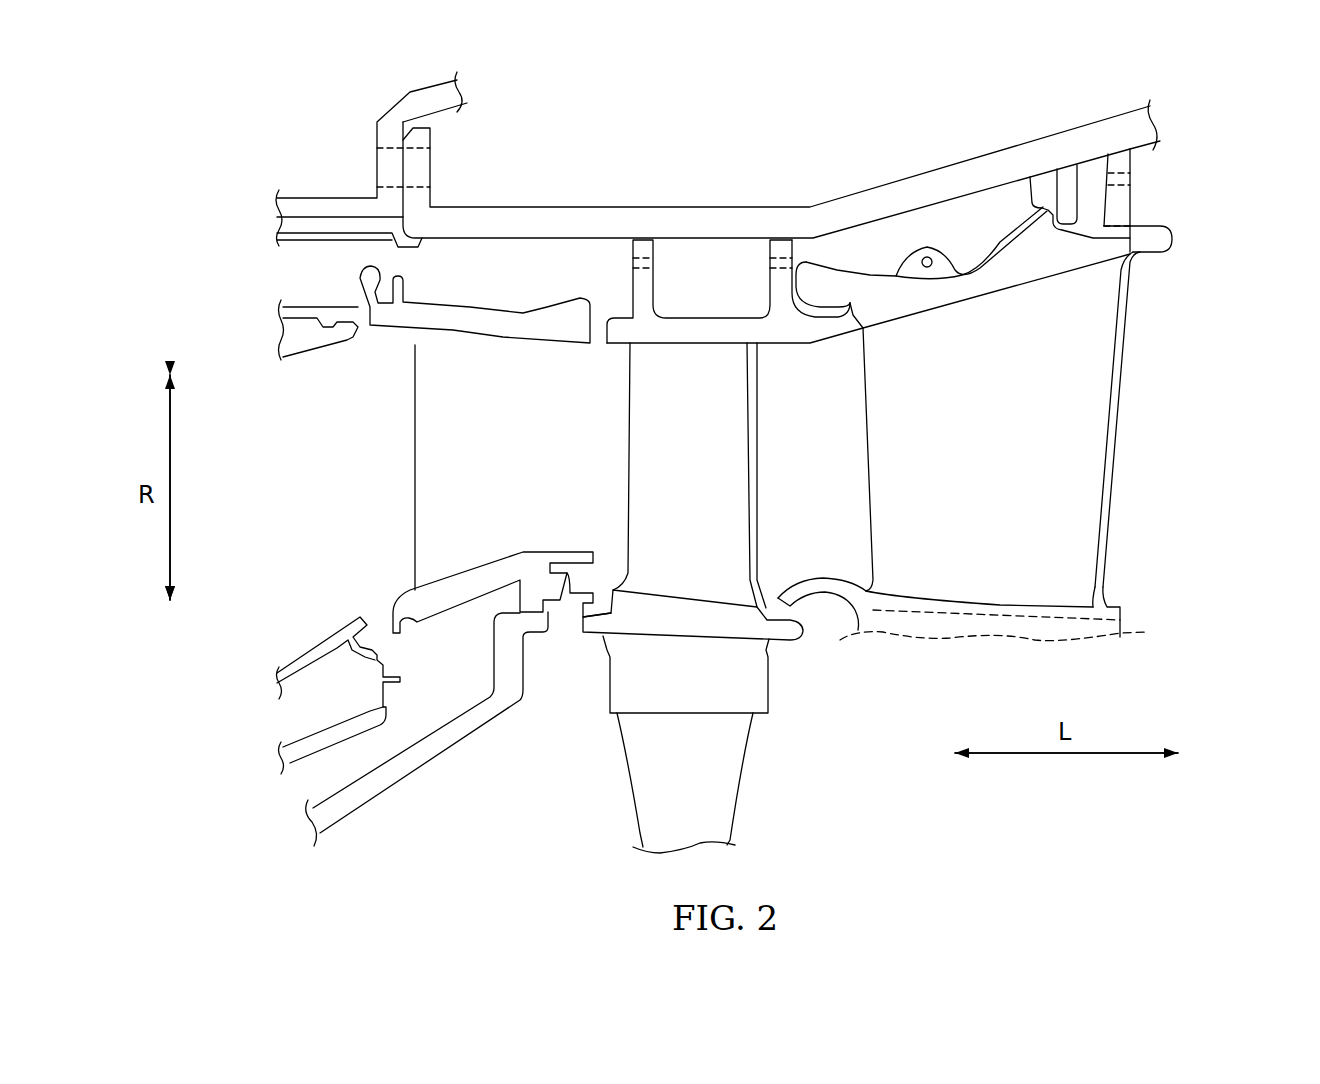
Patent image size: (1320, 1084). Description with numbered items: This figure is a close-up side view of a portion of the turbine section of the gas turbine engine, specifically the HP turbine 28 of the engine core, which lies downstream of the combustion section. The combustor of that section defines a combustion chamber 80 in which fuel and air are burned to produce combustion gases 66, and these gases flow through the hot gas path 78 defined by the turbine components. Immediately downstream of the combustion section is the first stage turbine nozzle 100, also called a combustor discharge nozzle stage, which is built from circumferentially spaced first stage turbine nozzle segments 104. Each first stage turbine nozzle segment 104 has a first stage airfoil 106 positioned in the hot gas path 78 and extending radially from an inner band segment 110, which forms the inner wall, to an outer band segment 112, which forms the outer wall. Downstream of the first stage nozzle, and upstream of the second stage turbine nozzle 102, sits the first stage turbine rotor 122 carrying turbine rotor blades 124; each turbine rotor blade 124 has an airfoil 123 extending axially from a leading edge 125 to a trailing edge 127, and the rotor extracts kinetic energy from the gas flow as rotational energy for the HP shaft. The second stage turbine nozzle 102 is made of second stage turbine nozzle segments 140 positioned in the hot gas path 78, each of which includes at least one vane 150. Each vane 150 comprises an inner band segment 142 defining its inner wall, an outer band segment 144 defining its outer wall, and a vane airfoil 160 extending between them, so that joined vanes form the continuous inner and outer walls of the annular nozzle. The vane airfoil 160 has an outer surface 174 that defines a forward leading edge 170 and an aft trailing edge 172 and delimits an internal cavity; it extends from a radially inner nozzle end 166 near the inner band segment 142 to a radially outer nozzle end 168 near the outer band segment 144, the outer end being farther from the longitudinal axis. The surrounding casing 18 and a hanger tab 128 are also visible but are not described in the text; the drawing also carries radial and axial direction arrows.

The outer casing 18 is at (890, 200).
The HP turbine 28 is at (622, 119).
The combustion gases 66 is at (320, 548).
The hot gas path 78 is at (274, 405).
The combustion chamber 80 is at (316, 465).
The first stage turbine nozzle 100 is at (524, 272).
The second stage turbine nozzle 102 is at (1014, 205).
The first stage turbine nozzle segment 104 is at (398, 538).
The first stage airfoil 106 is at (440, 432).
The inner band segment 110 is at (447, 597).
The outer band segment 112 is at (573, 297).
The first stage turbine rotor 122 is at (696, 275).
The airfoil 123 is at (713, 438).
The turbine rotor blade 124 is at (733, 468).
The leading edge 125 is at (626, 507).
The trailing edge 127 is at (760, 425).
The hanger tab 128 is at (1168, 240).
The second stage turbine nozzle segment 140 is at (1140, 586).
The inner band segment 142 is at (1047, 620).
The outer band segment 144 is at (840, 267).
The vane 150 is at (1175, 482).
The vane airfoil 160 is at (1010, 431).
The radially inner nozzle end 166 is at (890, 598).
The radially outer nozzle end 168 is at (977, 272).
The leading edge 170 is at (866, 541).
The trailing edge 172 is at (1118, 418).
The outer surface 174 is at (1090, 324).